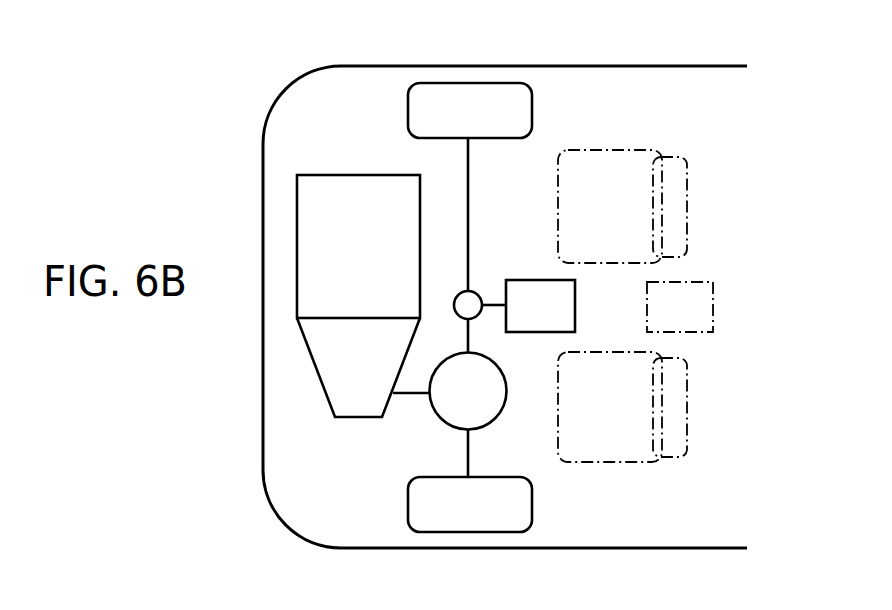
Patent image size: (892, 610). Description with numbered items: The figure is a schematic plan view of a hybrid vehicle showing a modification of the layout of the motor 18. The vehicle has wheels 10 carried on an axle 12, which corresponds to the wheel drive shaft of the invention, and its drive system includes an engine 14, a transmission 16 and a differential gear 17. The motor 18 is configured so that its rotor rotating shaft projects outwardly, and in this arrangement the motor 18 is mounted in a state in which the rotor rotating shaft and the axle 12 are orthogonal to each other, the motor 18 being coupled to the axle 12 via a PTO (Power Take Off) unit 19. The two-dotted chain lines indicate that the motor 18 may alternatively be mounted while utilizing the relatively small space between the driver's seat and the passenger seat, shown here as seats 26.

The wheels 10 is at (493, 97).
The axle 12 is at (470, 163).
The engine 14 is at (352, 195).
The transmission 16 is at (333, 382).
The differential gear 17 is at (450, 412).
The motor 18 is at (530, 333).
The PTO unit 19 is at (474, 293).
The seat 26 is at (633, 152).